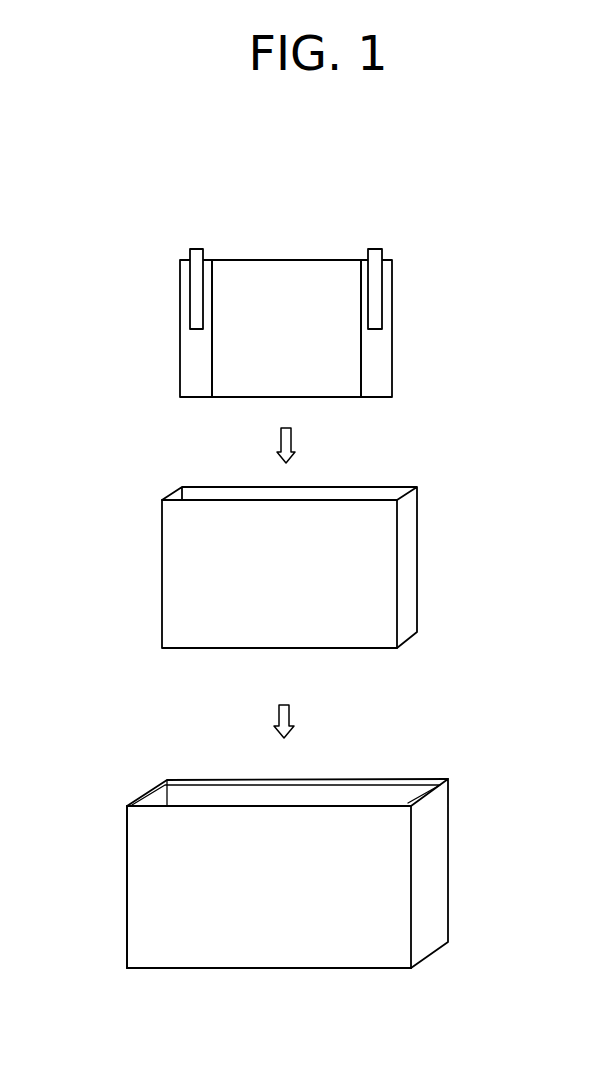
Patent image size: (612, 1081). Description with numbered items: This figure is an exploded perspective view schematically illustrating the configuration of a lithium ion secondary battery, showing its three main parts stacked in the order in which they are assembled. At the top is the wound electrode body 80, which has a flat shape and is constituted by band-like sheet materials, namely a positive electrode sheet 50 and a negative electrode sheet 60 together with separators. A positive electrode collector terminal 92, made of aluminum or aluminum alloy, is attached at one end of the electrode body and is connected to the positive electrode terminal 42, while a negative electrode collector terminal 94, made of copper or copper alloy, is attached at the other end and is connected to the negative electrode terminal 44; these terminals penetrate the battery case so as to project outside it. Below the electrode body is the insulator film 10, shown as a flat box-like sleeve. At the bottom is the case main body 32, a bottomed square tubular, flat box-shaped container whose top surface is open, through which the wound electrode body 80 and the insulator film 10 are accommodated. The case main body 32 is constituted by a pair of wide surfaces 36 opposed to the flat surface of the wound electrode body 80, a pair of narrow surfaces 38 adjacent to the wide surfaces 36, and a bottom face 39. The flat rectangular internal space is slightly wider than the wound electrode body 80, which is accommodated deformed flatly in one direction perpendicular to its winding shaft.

The wound electrode body 80 is at (291, 287).
The positive electrode sheet 50 is at (178, 375).
The negative electrode sheet 60 is at (394, 375).
The positive electrode terminal 42 is at (198, 257).
The negative electrode terminal 44 is at (376, 257).
The positive electrode collector terminal 92 is at (197, 313).
The negative electrode collector terminal 94 is at (378, 310).
The insulator film 10 is at (430, 537).
The case main body 32 is at (284, 914).
The wide surfaces 36 is at (292, 940).
The narrow surfaces 38 is at (433, 903).
The bottom face 39 is at (356, 968).